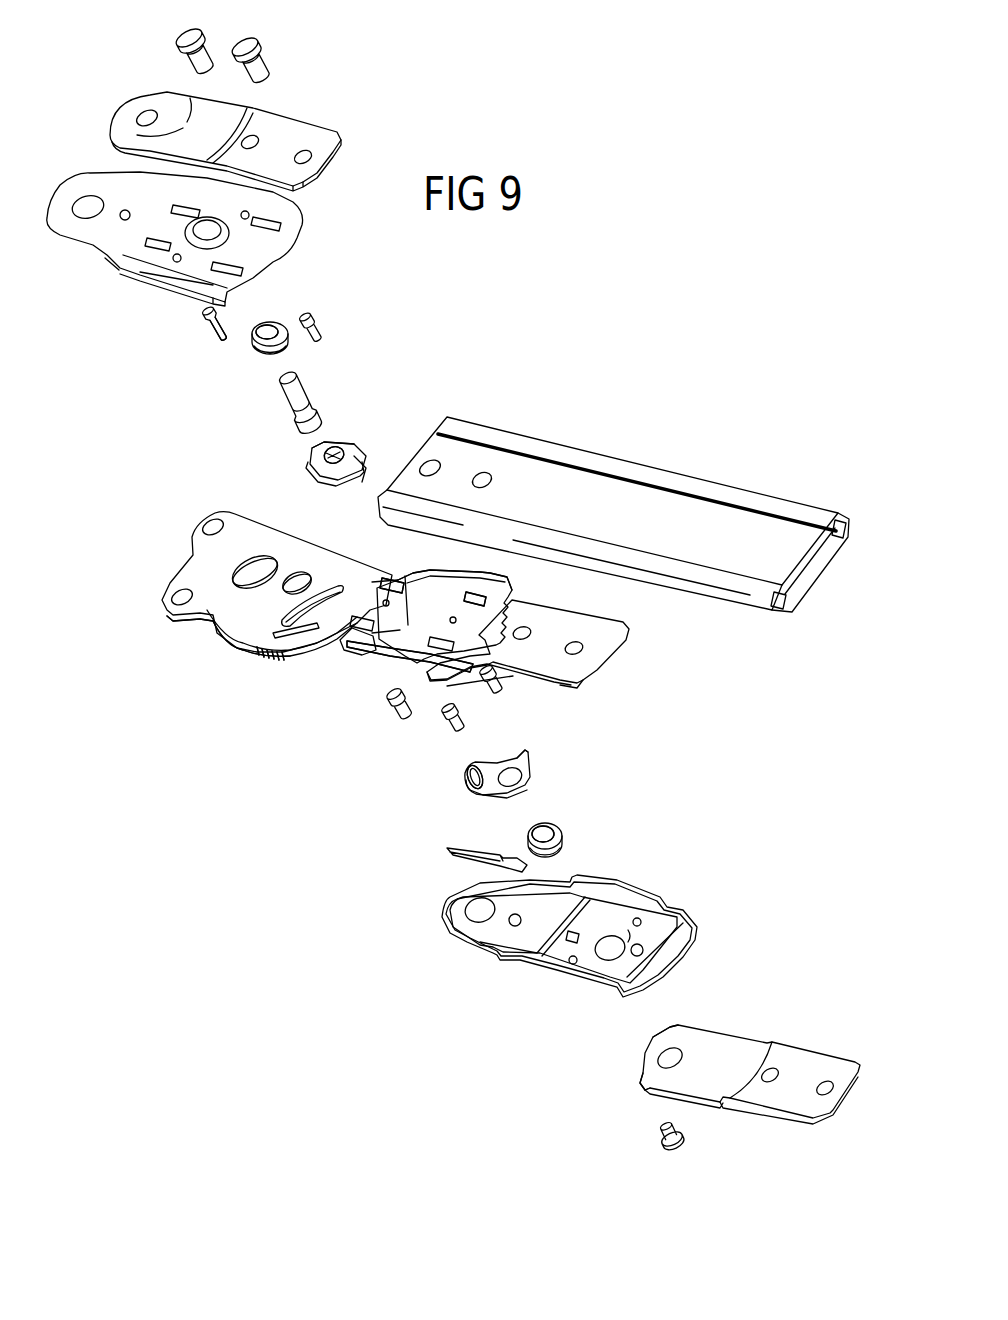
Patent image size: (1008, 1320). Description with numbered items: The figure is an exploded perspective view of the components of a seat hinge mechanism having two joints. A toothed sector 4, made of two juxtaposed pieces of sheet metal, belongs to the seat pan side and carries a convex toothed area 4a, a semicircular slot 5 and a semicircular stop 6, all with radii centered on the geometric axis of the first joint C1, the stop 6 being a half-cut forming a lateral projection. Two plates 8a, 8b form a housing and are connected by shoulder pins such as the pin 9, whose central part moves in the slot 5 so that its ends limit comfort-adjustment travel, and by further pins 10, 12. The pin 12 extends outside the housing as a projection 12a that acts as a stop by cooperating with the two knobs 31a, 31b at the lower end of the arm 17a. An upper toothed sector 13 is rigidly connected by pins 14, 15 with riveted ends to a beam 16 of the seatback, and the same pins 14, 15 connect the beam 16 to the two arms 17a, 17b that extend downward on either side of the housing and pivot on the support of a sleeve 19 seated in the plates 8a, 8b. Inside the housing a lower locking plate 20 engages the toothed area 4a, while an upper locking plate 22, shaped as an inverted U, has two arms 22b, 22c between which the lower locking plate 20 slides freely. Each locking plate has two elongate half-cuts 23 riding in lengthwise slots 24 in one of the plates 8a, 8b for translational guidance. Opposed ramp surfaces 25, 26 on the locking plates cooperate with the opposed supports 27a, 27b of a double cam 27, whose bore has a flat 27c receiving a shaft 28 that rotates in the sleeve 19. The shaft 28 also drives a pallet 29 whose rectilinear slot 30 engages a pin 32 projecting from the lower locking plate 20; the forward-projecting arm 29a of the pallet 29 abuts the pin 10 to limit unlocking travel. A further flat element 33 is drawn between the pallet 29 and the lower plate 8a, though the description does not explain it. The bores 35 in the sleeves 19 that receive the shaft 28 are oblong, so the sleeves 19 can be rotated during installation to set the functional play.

The toothed sector 4 is at (162, 569).
The convex toothed area 4a is at (275, 658).
The semicircular slot 5 is at (324, 588).
The semicircular stop 6 is at (222, 640).
The plate 8a is at (686, 897).
The plate 8b is at (140, 270).
The shoulder pin 9 is at (445, 725).
The pin 10 is at (316, 328).
The pin 12 is at (196, 327).
The projection 12a is at (212, 338).
The upper toothed sector 13 is at (604, 645).
The pin 14 is at (262, 71).
The pin 15 is at (188, 57).
The beam 16 is at (647, 475).
The arm 17a is at (728, 1055).
The arm 17b is at (297, 133).
The sleeve 19 is at (278, 316).
The lower locking plate 20 is at (337, 630).
The upper locking plate 22 is at (496, 616).
The arm 22b is at (445, 582).
The arm 22c is at (352, 648).
The elongate half-cut 23 is at (392, 578).
The lengthwise slot 24 is at (287, 222).
The ramp surface 25 is at (409, 600).
The ramp surface 26 is at (375, 640).
The double cam 27 is at (365, 423).
The support 27a is at (308, 452).
The support 27b is at (356, 468).
The flat 27c is at (324, 460).
The shaft 28 is at (306, 378).
The pallet 29 is at (566, 777).
The forward-projecting arm 29a is at (525, 752).
The rectilinear slot 30 is at (470, 784).
The knob 31a is at (645, 1092).
The knob 31b is at (672, 1033).
The pin 32 is at (500, 690).
The spring blade 33 is at (452, 869).
The bore 35 is at (260, 346).
The first joint C1 is at (390, 712).